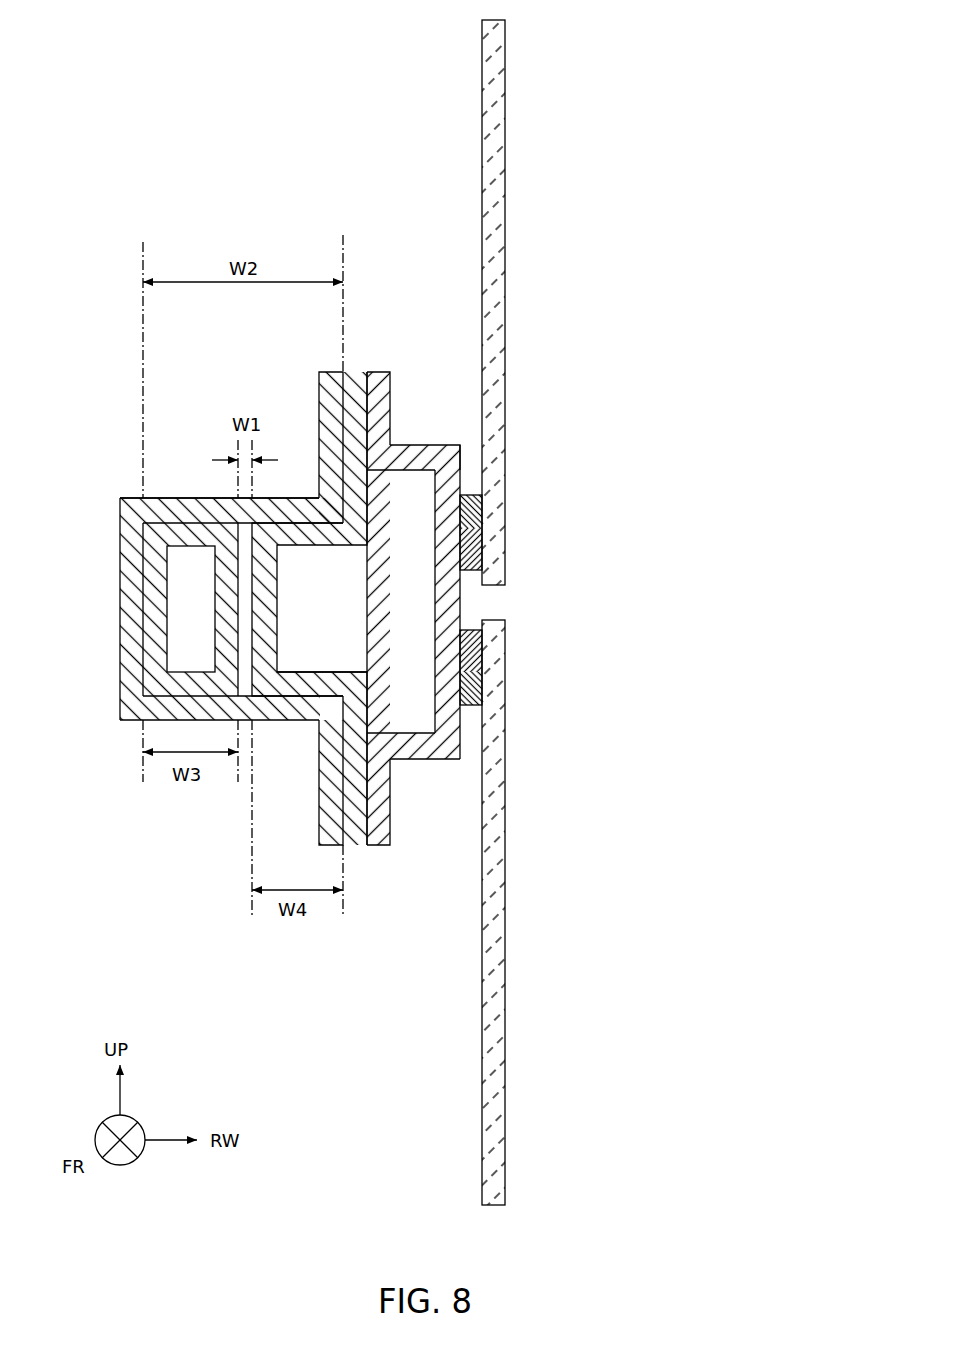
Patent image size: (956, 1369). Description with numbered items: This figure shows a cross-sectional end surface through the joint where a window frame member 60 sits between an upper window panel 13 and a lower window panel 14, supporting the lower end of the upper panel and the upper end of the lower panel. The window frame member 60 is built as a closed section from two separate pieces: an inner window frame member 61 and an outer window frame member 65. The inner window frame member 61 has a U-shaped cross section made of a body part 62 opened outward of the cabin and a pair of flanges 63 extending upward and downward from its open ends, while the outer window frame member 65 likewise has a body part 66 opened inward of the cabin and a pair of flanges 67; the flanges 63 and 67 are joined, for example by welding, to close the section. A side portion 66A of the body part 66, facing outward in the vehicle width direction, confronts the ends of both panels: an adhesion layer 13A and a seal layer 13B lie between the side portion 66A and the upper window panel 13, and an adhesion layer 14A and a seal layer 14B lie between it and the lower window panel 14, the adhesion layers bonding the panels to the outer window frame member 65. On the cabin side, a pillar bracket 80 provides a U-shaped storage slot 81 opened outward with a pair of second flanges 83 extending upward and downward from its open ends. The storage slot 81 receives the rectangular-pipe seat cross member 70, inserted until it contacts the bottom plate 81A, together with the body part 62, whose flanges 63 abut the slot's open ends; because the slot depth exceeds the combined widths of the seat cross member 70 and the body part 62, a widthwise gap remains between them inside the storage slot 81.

The upper window panel 13 is at (505, 263).
The adhesion layer 13A is at (482, 510).
The seal layer 13B is at (482, 557).
The lower window panel 14 is at (482, 807).
The adhesion layer 14A is at (482, 690).
The seal layer 14B is at (482, 647).
The window frame member 60 is at (582, 357).
The inner window frame member 61 is at (418, 446).
The body part 62 is at (313, 670).
The flanges 63 is at (352, 378).
The outer window frame member 65 is at (470, 500).
The body part 66 is at (433, 523).
The side portion 66A is at (435, 600).
The flanges 67 is at (383, 390).
The seat cross member 70 is at (163, 665).
The pillar bracket 80 is at (118, 633).
The storage slot 81 is at (178, 497).
The bottom plate 81A is at (120, 575).
The second flanges 83 is at (318, 390).